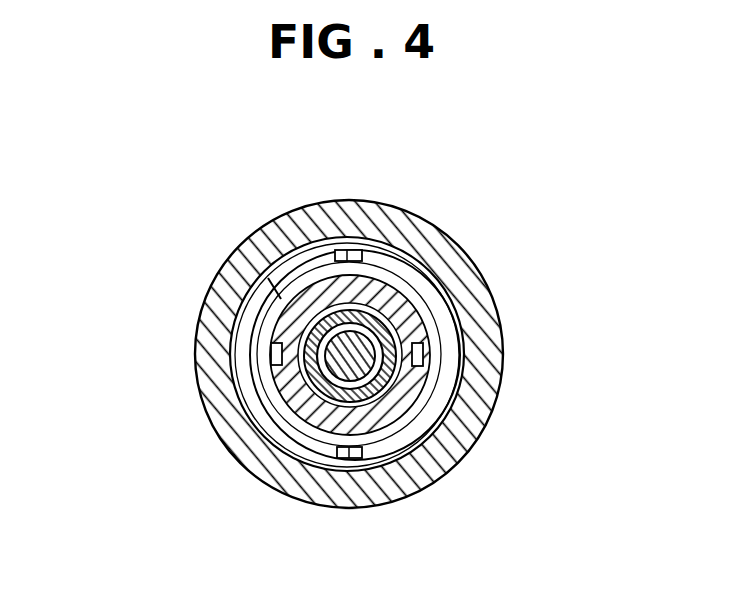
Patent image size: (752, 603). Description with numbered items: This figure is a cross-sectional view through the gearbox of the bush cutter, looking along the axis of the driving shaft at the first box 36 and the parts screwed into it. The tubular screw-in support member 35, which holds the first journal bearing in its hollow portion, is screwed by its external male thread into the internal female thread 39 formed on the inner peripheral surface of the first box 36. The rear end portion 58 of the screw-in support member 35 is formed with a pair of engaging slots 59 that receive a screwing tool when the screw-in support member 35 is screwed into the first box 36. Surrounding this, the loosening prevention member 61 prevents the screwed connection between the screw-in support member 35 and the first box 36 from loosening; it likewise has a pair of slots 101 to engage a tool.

The screw-in support member 35 is at (244, 268).
The first box 36 is at (192, 344).
The internal female thread 39 is at (250, 410).
The rear end portion 58 is at (323, 320).
The engaging slots 59 is at (272, 353).
The loosening prevention member 61 is at (312, 452).
The slots 101 is at (349, 262).